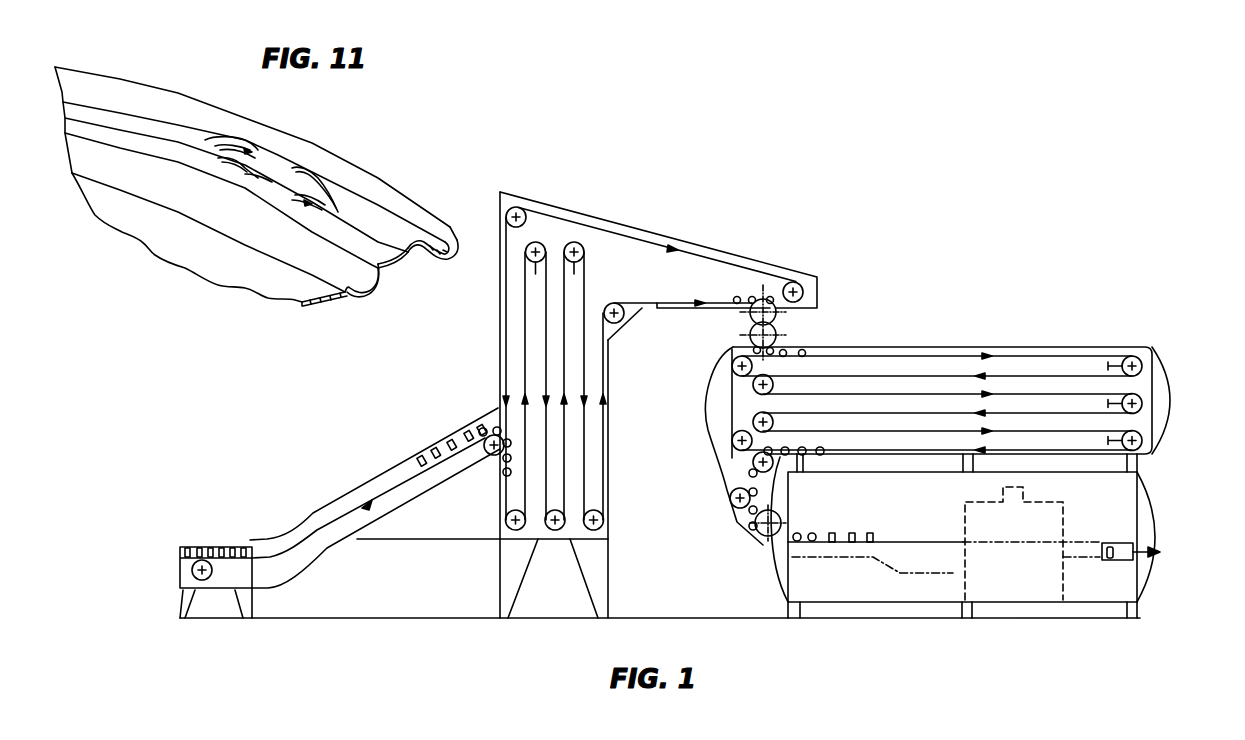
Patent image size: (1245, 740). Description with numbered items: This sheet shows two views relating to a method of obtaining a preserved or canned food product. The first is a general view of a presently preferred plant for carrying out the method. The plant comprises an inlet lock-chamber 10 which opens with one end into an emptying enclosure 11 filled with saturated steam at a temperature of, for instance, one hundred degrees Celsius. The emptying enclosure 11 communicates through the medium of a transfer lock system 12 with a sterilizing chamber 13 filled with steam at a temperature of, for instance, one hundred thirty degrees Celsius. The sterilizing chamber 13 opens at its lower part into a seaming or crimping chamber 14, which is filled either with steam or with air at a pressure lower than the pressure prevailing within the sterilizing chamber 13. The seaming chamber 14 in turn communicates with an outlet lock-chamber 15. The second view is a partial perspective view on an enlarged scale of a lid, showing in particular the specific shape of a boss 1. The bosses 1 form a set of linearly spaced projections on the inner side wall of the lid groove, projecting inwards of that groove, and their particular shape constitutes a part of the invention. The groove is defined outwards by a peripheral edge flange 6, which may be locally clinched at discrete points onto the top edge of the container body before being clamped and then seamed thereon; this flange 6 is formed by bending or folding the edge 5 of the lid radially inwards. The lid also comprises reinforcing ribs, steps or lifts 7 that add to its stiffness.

In FIG. 11, the boss 1 is at (297, 178).
In FIG. 11, the edge 5 is at (423, 253).
In FIG. 11, the peripheral edge flange 6 is at (455, 245).
In FIG. 11, the reinforcing rib 7 is at (367, 273).
In FIG. 1, the inlet lock-chamber 10 is at (210, 536).
In FIG. 1, the emptying enclosure 11 is at (443, 428).
In FIG. 1, the transfer lock system 12 is at (805, 328).
In FIG. 1, the sterilizing chamber 13 is at (994, 332).
In FIG. 1, the seaming chamber 14 is at (1168, 506).
In FIG. 1, the outlet lock-chamber 15 is at (1137, 560).